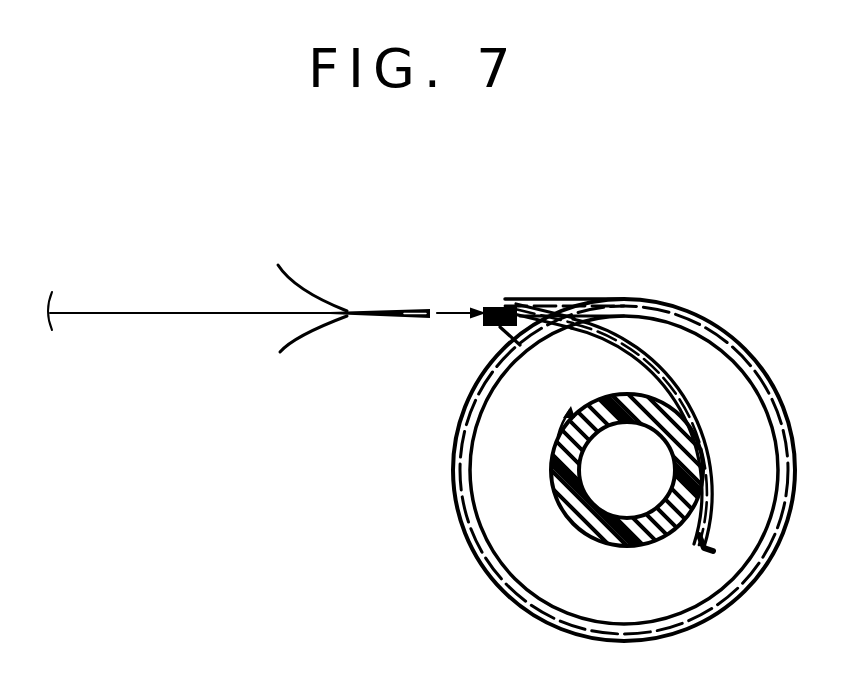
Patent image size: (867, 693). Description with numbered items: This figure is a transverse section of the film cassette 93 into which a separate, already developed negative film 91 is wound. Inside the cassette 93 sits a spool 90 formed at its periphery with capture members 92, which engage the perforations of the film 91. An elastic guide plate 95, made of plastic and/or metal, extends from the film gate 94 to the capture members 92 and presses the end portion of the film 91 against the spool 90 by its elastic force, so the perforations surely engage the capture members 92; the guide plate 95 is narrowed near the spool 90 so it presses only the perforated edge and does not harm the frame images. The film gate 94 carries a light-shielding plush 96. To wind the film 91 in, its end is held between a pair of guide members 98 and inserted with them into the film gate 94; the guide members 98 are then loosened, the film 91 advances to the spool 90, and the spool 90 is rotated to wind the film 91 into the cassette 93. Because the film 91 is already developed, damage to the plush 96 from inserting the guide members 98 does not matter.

The spool 90 is at (668, 535).
The negative film 91 is at (137, 311).
The capture members 92 is at (573, 523).
The cassette 93 is at (446, 461).
The film gate 94 is at (472, 297).
The elastic guide plate 95 is at (677, 372).
The light-shielding plush 96 is at (492, 300).
The guide members 98 is at (312, 293).